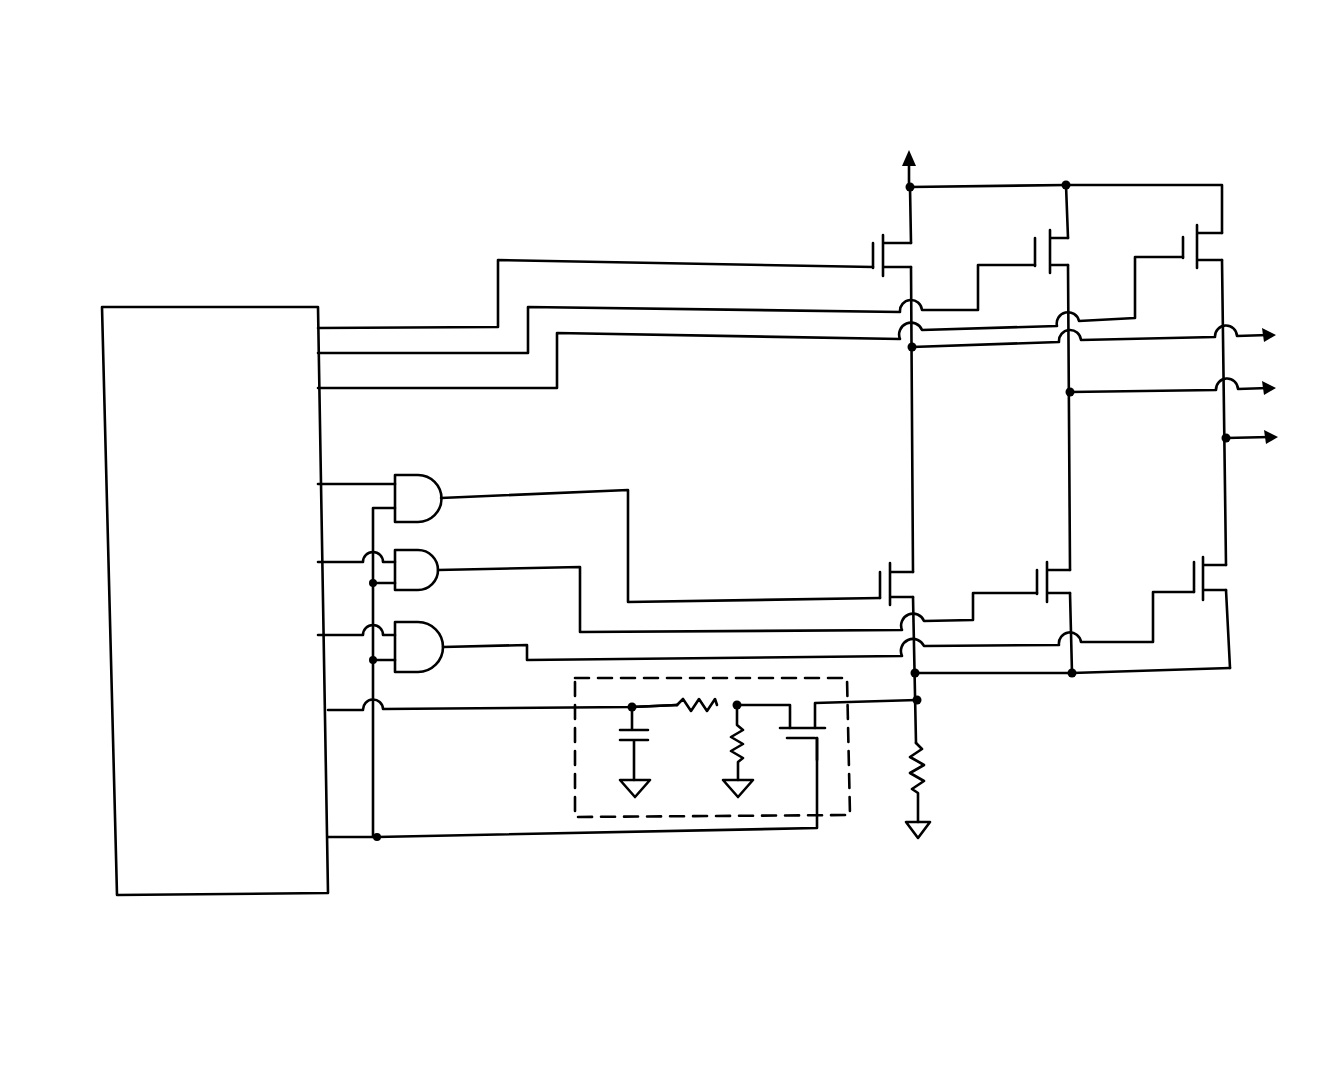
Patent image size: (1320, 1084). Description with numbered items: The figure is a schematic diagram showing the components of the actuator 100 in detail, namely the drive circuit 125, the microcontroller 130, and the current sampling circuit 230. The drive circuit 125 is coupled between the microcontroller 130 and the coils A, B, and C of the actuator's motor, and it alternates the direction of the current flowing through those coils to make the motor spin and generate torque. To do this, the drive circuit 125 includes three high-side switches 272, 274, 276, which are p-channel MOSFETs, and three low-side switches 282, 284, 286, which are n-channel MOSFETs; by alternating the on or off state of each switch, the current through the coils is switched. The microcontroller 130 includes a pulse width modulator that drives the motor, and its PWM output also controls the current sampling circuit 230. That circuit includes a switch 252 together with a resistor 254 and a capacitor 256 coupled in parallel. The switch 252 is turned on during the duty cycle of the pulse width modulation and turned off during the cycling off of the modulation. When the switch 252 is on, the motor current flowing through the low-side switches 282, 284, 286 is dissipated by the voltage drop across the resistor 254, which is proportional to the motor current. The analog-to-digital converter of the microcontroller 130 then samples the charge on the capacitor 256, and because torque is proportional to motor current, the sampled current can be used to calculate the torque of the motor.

The actuator 100 is at (270, 196).
The drive circuit 125 is at (1086, 124).
The microcontroller 130 is at (216, 411).
The current sampling circuit 230 is at (845, 812).
The switch 252 is at (802, 744).
The resistor 254 is at (724, 748).
The capacitor 256 is at (626, 742).
The high-side switch 272 is at (876, 238).
The high-side switch 274 is at (1072, 253).
The high-side switch 276 is at (1214, 244).
The low-side switch 282 is at (890, 556).
The low-side switch 284 is at (1077, 578).
The low-side switch 286 is at (1238, 580).